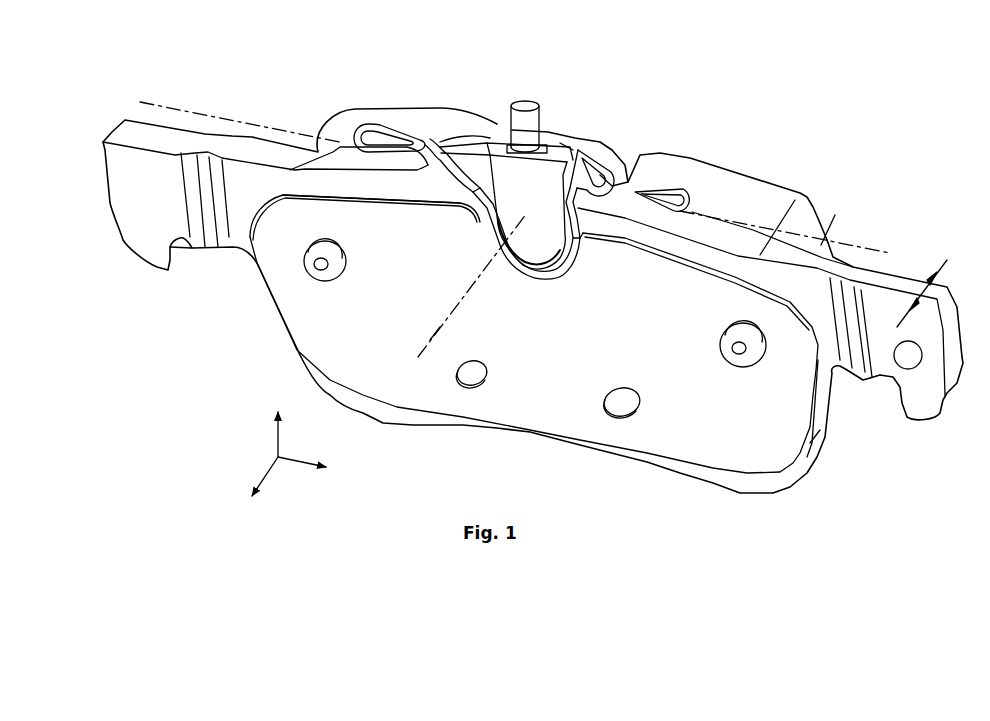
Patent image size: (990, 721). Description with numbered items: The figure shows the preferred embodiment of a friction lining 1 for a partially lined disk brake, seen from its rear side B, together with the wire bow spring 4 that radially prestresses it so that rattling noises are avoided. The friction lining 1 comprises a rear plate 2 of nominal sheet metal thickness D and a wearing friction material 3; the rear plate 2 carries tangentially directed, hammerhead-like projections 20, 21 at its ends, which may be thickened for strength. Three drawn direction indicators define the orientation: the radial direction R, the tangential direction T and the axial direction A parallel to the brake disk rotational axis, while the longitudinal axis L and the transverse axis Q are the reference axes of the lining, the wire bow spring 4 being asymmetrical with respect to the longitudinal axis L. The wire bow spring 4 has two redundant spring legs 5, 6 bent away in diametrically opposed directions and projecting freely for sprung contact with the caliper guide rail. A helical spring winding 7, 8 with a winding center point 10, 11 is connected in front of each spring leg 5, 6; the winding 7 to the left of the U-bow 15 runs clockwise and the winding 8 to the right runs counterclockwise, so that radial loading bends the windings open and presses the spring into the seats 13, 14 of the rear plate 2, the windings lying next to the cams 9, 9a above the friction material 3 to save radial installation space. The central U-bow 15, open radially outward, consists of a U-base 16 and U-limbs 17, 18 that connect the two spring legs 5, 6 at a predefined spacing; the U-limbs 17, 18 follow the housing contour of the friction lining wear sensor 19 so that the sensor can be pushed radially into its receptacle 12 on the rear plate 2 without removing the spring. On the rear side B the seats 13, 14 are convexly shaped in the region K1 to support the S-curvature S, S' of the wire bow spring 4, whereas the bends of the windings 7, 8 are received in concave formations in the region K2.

The friction lining 1 is at (229, 78).
The rear plate 2 is at (333, 180).
The friction material 3 is at (303, 163).
The wire bow spring 4 is at (380, 105).
The spring leg 5 is at (387, 120).
The spring leg 6 is at (677, 187).
The spring winding 7 is at (450, 143).
The spring winding 8 is at (593, 155).
The cam 9 is at (618, 170).
The cam 9a is at (452, 140).
The winding center point 10 is at (475, 163).
The winding center point 11 is at (580, 150).
The receptacle 12 is at (556, 220).
The seat 13 is at (472, 163).
The seat 14 is at (634, 175).
The U-bow 15 is at (490, 245).
The U-base 16 is at (506, 266).
The U-limb 17 is at (480, 225).
The U-limb 18 is at (576, 235).
The friction lining wear sensor 19 is at (537, 235).
The projection 20 is at (197, 232).
The projection 21 is at (867, 380).
The region K1 is at (426, 178).
The region K2 is at (493, 262).
The curvature S is at (448, 205).
The curvature S' is at (603, 250).
The longitudinal axis L is at (893, 253).
The transverse axis Q is at (430, 340).
The sheet metal thickness D is at (926, 284).
The rear side B is at (908, 355).
The radial direction R is at (267, 429).
The tangential direction T is at (304, 474).
The axial direction A is at (255, 487).